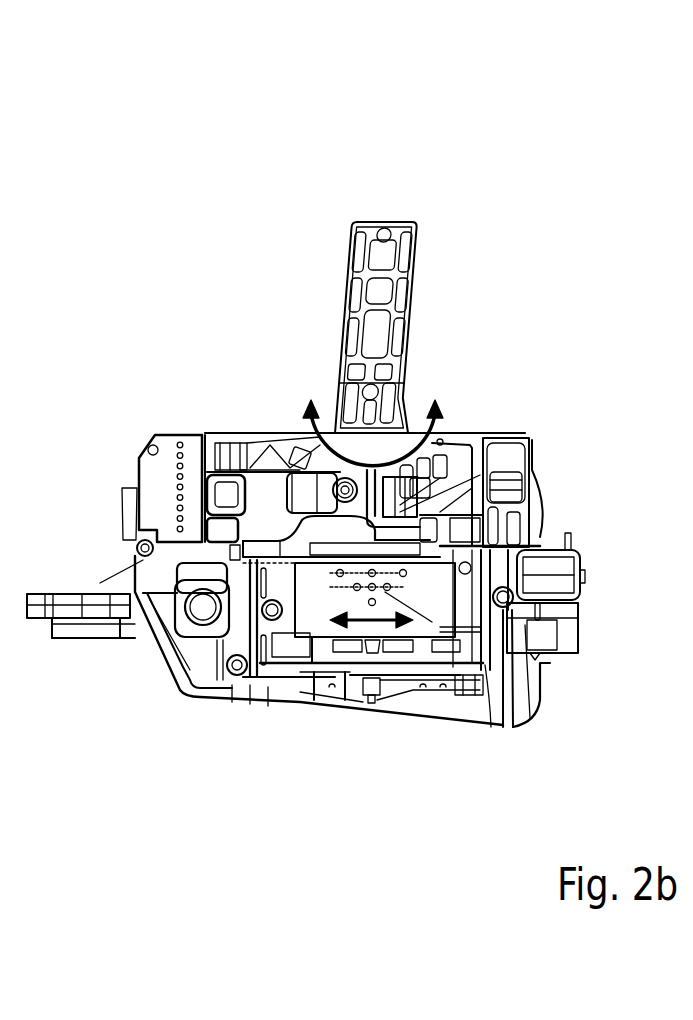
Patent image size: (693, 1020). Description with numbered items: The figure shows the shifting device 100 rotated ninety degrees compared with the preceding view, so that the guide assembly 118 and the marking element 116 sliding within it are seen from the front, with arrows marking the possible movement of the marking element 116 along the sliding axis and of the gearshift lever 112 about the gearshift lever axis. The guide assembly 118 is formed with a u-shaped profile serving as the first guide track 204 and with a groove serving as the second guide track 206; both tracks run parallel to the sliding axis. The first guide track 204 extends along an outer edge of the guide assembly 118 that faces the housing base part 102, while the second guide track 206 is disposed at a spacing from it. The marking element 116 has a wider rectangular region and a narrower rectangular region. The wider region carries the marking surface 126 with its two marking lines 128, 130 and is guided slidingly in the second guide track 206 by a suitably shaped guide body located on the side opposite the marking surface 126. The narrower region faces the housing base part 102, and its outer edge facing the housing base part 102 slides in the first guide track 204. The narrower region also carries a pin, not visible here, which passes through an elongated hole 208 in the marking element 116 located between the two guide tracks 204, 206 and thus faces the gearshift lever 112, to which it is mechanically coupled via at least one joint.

The shifting device 100 is at (203, 263).
The gearshift lever 112 is at (418, 258).
The marking line 128 is at (445, 476).
The guide assembly 118 is at (515, 555).
The second guide track 206 is at (453, 590).
The housing base part 102 is at (578, 637).
The marking line 130 is at (440, 627).
The marking surface 126 is at (318, 592).
The marking element 116 is at (330, 566).
The elongated hole 208 is at (300, 640).
The first guide track 204 is at (487, 660).